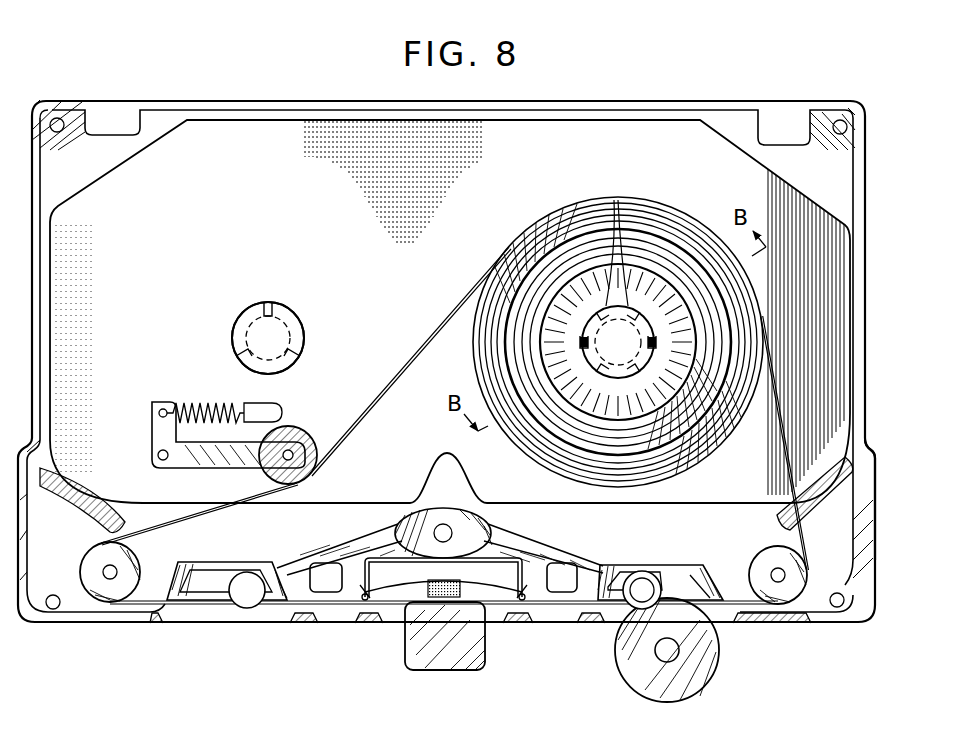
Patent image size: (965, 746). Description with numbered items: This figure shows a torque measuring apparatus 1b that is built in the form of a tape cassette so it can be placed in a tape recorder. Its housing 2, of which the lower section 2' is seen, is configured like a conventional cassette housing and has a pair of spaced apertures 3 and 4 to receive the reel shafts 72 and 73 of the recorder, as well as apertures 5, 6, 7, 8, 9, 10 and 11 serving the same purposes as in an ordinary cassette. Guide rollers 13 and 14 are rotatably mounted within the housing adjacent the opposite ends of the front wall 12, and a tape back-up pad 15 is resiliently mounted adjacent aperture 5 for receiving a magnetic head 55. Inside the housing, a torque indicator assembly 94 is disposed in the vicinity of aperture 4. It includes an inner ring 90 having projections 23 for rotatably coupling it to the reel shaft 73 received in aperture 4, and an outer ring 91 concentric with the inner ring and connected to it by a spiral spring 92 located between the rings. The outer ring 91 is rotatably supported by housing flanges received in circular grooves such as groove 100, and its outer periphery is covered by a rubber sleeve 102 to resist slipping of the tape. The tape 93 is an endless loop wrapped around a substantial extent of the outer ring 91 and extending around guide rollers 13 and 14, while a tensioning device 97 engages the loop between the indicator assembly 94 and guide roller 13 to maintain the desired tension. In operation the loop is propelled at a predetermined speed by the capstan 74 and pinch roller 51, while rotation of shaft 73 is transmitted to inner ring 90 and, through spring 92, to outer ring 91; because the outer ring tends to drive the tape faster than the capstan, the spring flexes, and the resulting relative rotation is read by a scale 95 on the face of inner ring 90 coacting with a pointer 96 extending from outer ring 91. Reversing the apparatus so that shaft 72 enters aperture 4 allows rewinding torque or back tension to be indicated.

The torque measuring apparatus 1b is at (885, 146).
The housing 2 is at (466, 356).
The lower section of the housing 2' is at (892, 400).
The aperture 3 is at (237, 340).
The reel shaft 72 is at (248, 328).
The tensioning device 97 is at (152, 435).
The tape 93 is at (356, 424).
The guide roller 13 is at (98, 556).
The front wall 12 is at (137, 622).
The aperture 8 is at (245, 608).
The aperture 6 is at (272, 618).
The aperture 10 is at (330, 592).
The aperture 5 is at (400, 622).
The tape back-up pad 15 is at (448, 600).
The magnetic head 55 is at (485, 645).
The aperture 11 is at (557, 592).
The aperture 7 is at (615, 618).
The aperture 9 is at (636, 572).
The capstan 74 is at (652, 580).
The guide roller 14 is at (765, 564).
The pinch roller 51 is at (718, 645).
The torque indicator assembly 94 is at (566, 205).
The projections 23 is at (614, 200).
The outer ring 91 is at (665, 222).
The pointer 96 is at (703, 290).
The spiral spring 92 is at (546, 416).
The scale 95 is at (582, 436).
The circular groove 100 is at (500, 290).
The rubber sleeve 102 is at (505, 285).
The inner ring 90 is at (556, 342).
The reel shaft 73 is at (586, 352).
The aperture 4 is at (636, 366).